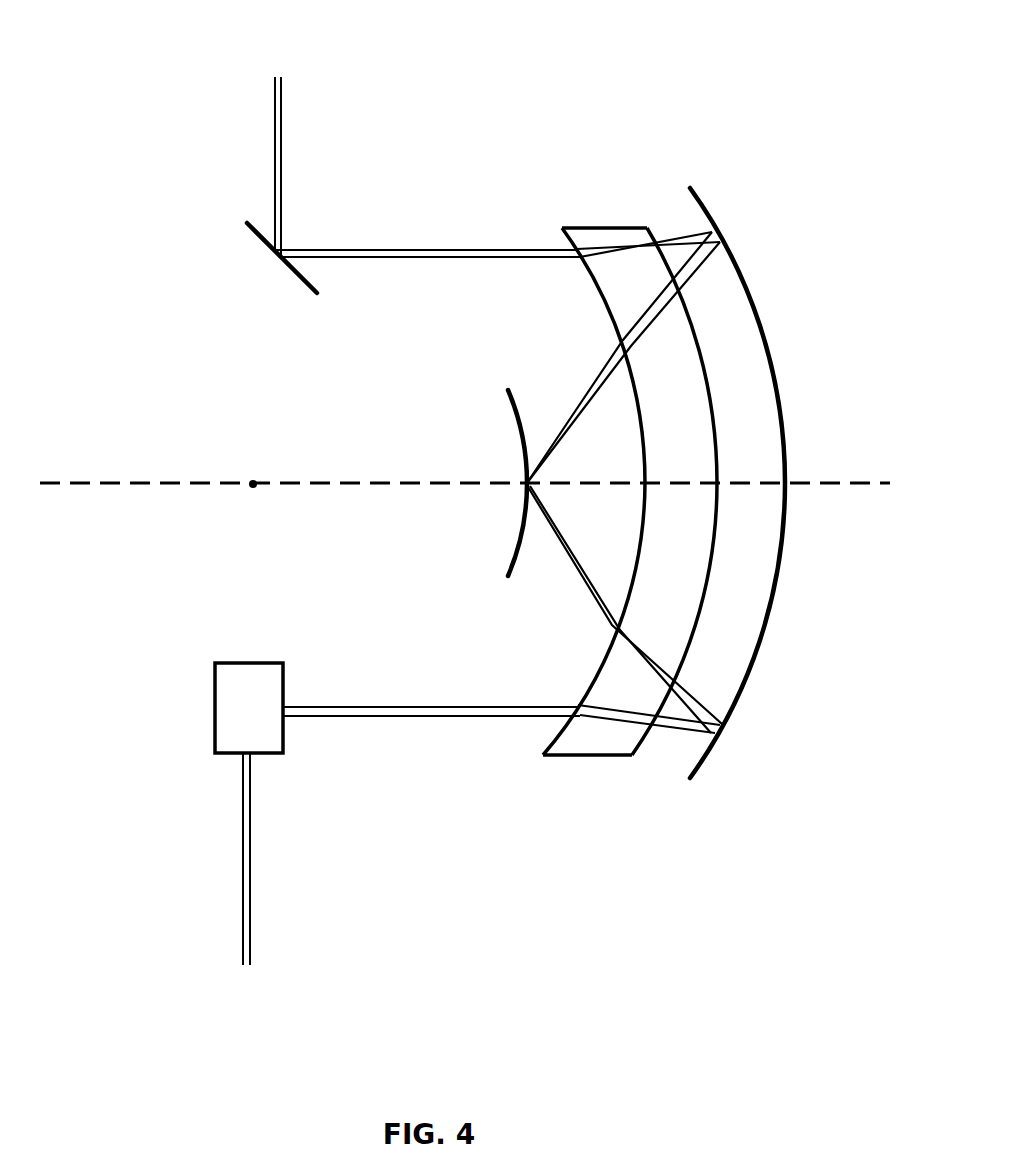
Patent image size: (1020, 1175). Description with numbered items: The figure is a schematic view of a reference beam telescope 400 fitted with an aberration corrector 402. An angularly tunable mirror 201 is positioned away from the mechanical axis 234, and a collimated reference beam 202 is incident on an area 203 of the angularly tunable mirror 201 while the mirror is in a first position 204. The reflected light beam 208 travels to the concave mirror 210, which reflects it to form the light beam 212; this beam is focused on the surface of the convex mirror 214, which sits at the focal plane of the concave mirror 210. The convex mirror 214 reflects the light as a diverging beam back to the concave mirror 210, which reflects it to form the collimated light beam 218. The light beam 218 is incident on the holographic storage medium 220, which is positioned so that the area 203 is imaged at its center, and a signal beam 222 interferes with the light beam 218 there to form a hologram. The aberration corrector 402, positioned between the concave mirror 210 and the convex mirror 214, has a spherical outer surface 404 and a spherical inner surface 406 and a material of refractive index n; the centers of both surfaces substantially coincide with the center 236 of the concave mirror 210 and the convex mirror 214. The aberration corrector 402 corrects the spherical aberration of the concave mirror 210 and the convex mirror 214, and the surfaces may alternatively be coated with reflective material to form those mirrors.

The reference beam telescope 400 is at (786, 175).
The angularly tunable mirror 201 is at (313, 293).
The reference beam 202 is at (275, 103).
The area 203 is at (282, 252).
The first position 204 is at (241, 297).
The light beam 208 is at (497, 318).
The concave mirror 210 is at (780, 587).
The light beam 212 is at (603, 367).
The convex mirror 214 is at (494, 453).
The light beam 218 is at (463, 705).
The holographic storage medium 220 is at (215, 683).
The signal beam 222 is at (248, 858).
The mechanical axis 234 is at (832, 478).
The center 236 is at (253, 485).
The aberration corrector 402 is at (590, 553).
The outer surface 404 is at (552, 738).
The inner surface 406 is at (640, 743).